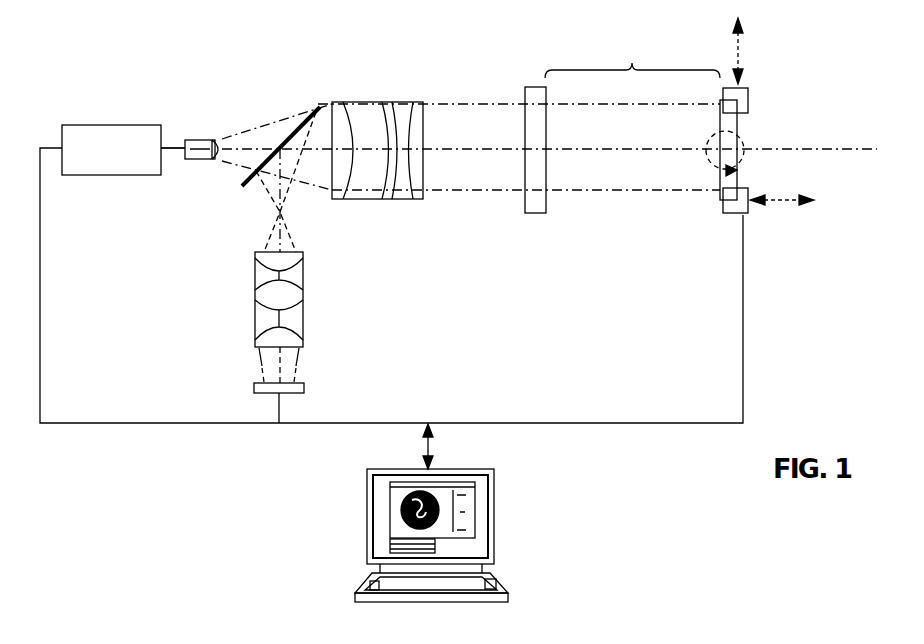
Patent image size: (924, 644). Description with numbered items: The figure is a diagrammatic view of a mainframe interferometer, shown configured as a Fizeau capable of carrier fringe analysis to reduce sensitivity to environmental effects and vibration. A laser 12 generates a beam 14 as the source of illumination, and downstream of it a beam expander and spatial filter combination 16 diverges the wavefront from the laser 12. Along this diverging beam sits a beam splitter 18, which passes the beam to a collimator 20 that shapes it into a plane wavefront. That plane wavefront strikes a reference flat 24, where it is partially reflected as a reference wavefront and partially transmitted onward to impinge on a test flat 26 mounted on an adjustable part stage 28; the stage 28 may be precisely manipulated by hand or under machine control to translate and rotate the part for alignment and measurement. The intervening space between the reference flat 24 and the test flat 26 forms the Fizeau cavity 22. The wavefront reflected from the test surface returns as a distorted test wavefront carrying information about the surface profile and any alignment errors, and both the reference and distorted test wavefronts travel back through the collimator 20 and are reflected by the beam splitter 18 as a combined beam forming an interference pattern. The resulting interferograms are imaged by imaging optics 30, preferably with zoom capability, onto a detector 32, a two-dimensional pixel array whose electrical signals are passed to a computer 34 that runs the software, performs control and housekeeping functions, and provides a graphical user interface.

The laser 12 is at (116, 176).
The beam 14 is at (173, 152).
The beam expander and spatial filter combination 16 is at (203, 140).
The beam splitter 18 is at (244, 181).
The collimator 20 is at (406, 103).
The Fizeau cavity 22 is at (632, 60).
The reference flat 24 is at (547, 200).
The test flat 26 is at (718, 196).
The adjustable part stage 28 is at (748, 100).
The imaging optics 30 is at (304, 277).
The detector 32 is at (296, 387).
The computer 34 is at (495, 520).